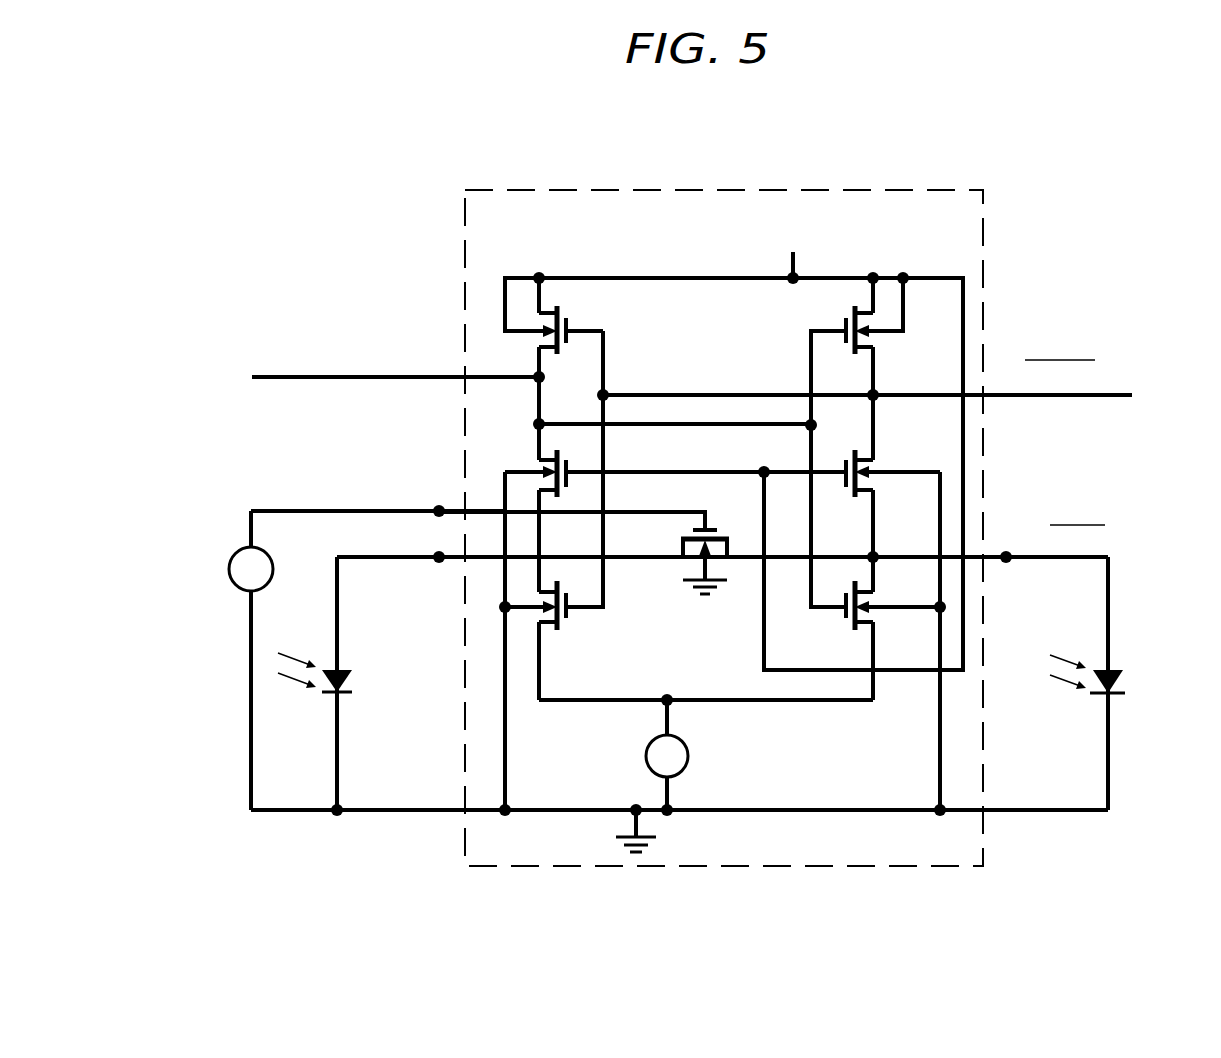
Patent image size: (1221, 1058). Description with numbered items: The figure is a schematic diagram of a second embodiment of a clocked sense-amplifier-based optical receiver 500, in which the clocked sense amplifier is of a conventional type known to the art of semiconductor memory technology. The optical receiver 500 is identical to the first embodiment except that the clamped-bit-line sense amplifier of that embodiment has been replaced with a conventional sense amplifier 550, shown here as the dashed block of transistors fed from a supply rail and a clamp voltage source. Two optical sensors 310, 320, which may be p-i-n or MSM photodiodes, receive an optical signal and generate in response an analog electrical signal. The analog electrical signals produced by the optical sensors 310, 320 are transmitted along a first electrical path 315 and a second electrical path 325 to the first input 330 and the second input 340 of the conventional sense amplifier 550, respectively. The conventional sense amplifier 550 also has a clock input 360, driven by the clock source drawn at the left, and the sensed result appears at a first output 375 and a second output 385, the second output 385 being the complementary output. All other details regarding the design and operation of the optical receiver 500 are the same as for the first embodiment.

The optical receiver 500 is at (1118, 178).
The conventional sense amplifier 550 is at (882, 190).
The first output 375 is at (252, 377).
The second output 385 is at (1132, 395).
The first input 330 is at (425, 545).
The clock input 360 is at (439, 511).
The first electrical path 315 is at (377, 562).
The optical sensor 310 is at (345, 693).
The second input 340 is at (1006, 557).
The second electrical path 325 is at (1068, 562).
The optical sensor 320 is at (1120, 694).